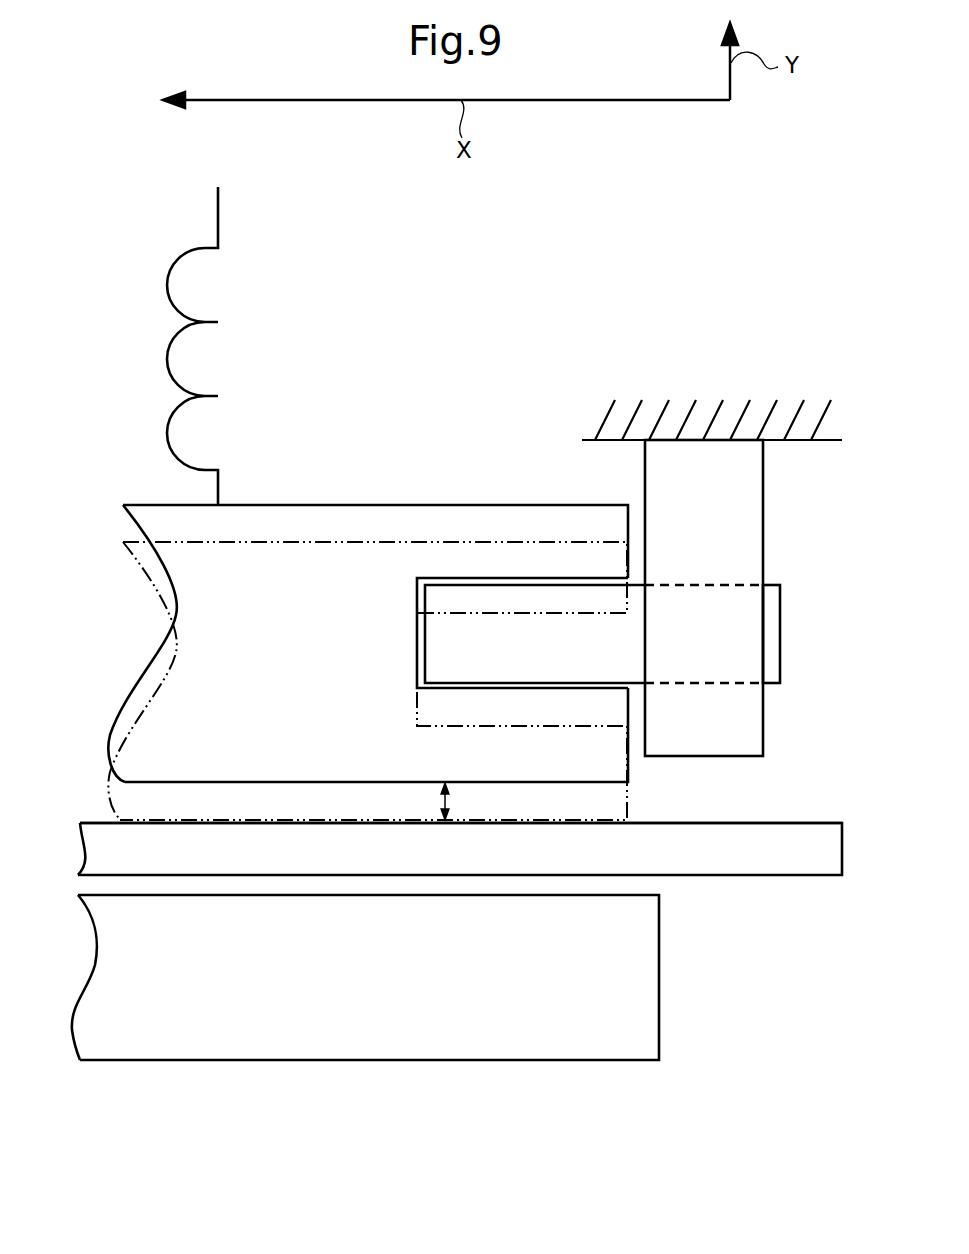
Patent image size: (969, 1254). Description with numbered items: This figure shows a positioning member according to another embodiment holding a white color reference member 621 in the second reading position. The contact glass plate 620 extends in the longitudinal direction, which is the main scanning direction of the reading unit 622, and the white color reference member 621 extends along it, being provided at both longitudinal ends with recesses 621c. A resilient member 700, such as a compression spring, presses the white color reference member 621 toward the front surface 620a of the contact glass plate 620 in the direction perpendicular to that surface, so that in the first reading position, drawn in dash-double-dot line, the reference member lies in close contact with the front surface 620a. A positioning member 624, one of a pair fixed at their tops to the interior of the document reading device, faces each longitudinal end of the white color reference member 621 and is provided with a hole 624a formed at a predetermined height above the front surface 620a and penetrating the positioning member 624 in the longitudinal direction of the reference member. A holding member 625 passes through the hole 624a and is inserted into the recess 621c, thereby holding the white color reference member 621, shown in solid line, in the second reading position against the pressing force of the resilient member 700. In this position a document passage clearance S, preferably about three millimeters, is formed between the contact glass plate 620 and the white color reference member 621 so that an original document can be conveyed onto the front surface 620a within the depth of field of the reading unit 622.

The resilient member 700 is at (218, 222).
The white color reference member 621 is at (305, 503).
The recess 621c is at (537, 688).
The holding member 625 is at (772, 585).
The positioning member 624 is at (698, 497).
The hole 624a is at (707, 585).
The document passage clearance S is at (429, 801).
The contact glass plate 620 is at (122, 850).
The front surface 620a is at (818, 822).
The reading unit 622 is at (425, 1043).